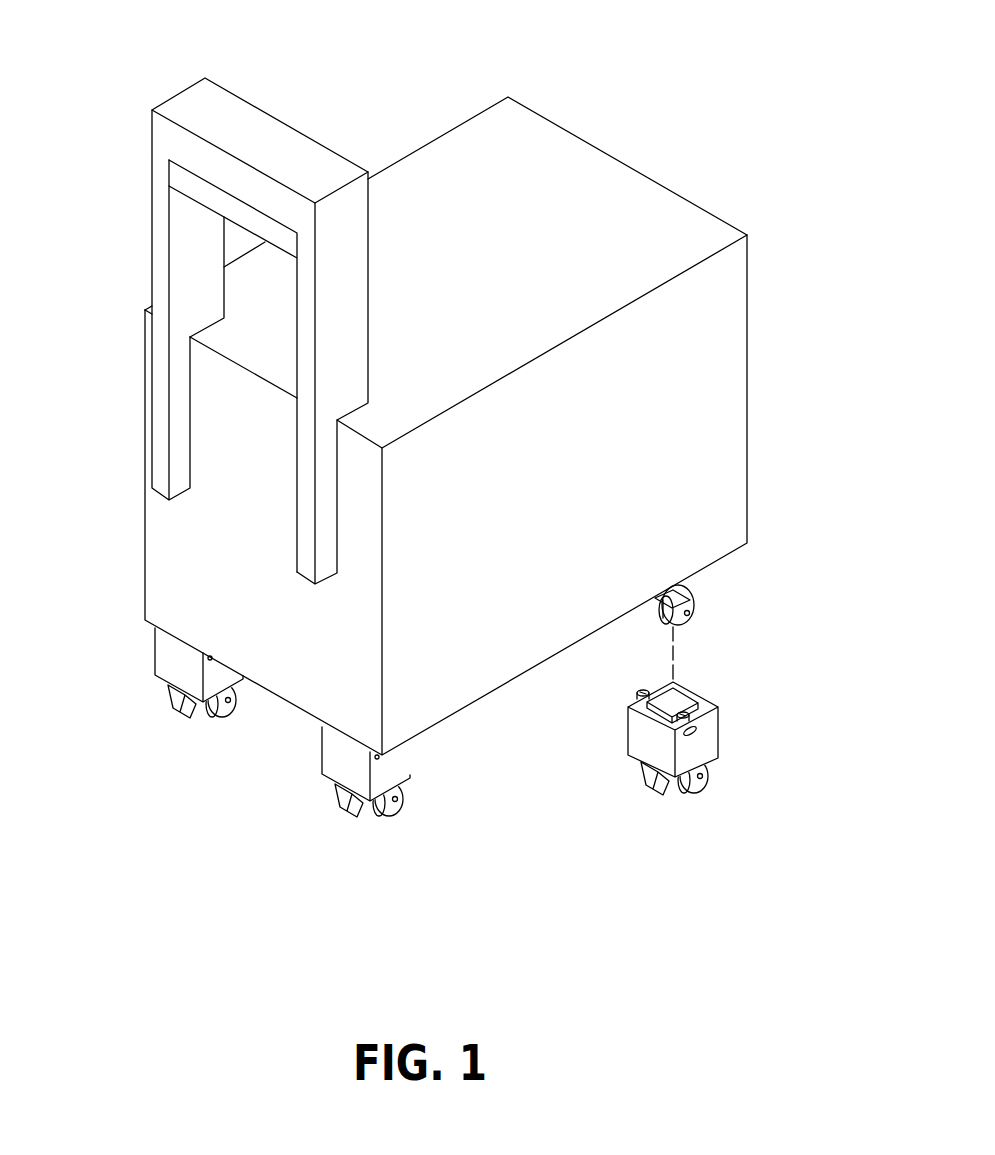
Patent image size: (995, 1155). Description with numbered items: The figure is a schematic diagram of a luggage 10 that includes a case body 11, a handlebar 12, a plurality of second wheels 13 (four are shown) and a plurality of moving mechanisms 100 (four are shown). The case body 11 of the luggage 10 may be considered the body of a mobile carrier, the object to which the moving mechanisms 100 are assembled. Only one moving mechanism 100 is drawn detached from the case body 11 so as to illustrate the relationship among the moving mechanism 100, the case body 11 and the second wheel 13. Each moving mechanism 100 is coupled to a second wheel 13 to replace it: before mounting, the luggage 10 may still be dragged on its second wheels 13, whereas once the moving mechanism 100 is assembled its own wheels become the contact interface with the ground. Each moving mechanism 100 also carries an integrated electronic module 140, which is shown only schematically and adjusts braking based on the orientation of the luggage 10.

The luggage 10 is at (852, 552).
The case body 11 is at (728, 308).
The handlebar 12 is at (150, 170).
The second wheel 13 is at (697, 597).
The moving mechanism 100 is at (818, 805).
The integrated electronic module 140 is at (237, 210).